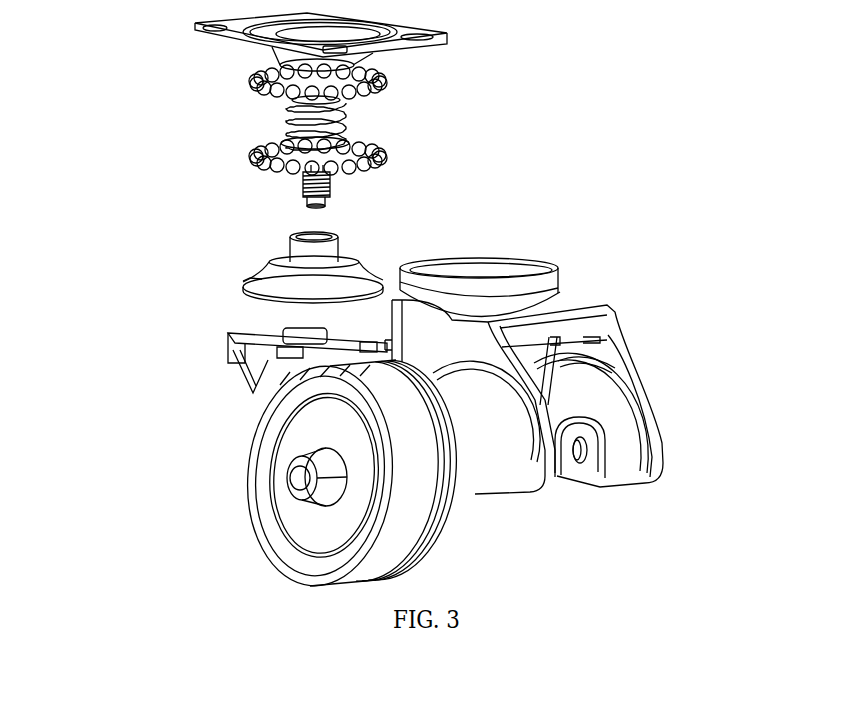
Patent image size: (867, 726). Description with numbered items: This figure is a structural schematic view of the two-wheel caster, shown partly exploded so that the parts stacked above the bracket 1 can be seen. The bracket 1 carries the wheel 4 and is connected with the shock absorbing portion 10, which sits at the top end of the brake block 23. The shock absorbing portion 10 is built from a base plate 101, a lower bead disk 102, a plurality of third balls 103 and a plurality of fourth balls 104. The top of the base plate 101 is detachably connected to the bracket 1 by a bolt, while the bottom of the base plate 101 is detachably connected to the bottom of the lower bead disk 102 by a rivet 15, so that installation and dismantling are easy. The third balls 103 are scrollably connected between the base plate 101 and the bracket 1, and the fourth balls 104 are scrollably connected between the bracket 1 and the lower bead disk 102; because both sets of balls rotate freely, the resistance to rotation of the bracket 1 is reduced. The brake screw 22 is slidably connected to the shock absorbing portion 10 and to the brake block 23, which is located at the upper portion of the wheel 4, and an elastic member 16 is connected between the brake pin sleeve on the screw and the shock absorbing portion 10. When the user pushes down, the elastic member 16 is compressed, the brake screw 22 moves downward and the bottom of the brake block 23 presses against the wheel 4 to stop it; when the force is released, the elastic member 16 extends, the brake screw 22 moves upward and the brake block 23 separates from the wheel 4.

The bracket 1 is at (467, 302).
The wheel 4 is at (298, 438).
The shock absorbing portion 10 is at (651, 43).
The base plate 101 is at (242, 37).
The lower bead disk 102 is at (278, 268).
The third ball 103 is at (293, 88).
The fourth ball 104 is at (290, 163).
The rivet 15 is at (320, 257).
The elastic member 16 is at (338, 139).
The brake screw 22 is at (323, 187).
The brake block 23 is at (270, 346).